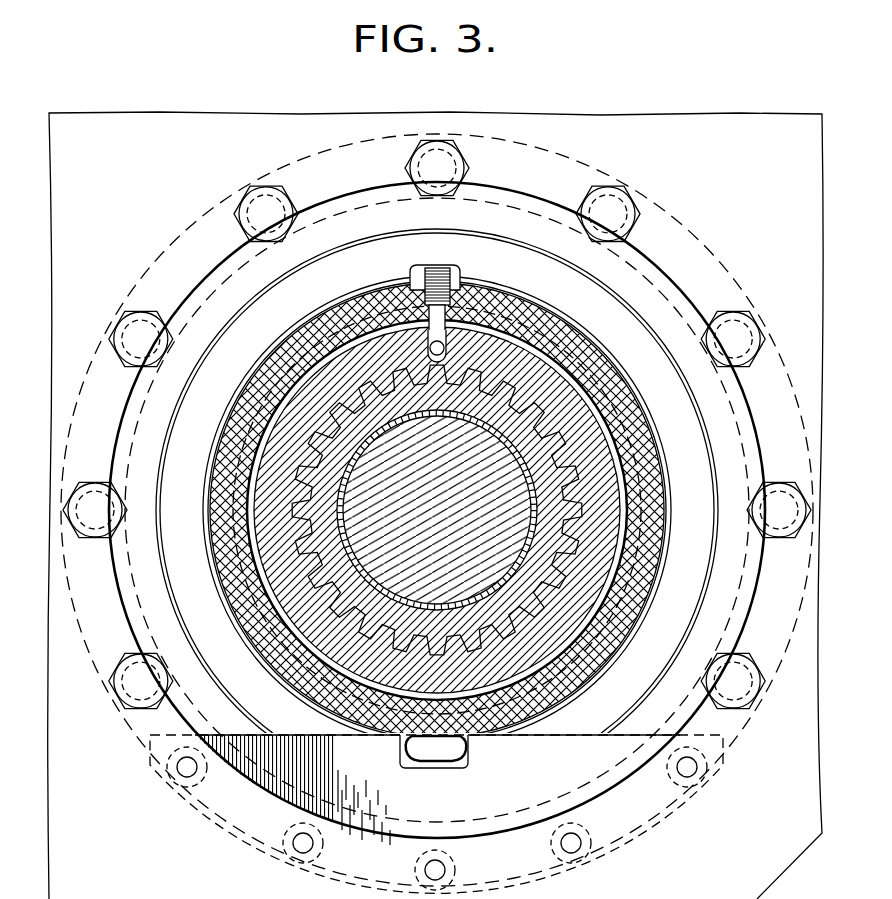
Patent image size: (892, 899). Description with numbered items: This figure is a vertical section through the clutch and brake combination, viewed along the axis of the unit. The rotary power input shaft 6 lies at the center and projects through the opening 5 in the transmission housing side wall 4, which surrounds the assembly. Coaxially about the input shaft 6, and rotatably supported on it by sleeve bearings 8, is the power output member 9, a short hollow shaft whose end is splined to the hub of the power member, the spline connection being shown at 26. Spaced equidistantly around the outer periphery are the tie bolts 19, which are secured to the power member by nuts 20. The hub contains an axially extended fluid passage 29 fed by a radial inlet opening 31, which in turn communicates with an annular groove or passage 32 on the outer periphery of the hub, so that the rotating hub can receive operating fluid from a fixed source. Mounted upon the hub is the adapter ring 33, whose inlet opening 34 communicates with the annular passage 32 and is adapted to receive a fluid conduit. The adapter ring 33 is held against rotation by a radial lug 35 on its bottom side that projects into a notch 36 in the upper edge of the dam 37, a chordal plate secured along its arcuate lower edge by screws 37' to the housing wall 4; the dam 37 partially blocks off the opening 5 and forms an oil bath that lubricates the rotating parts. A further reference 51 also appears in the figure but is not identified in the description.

The transmission housing side wall 4 is at (753, 258).
The opening 5 is at (668, 282).
The rotary power input shaft 6 is at (513, 497).
The sleeve bearings 8 is at (560, 463).
The power output member 9 is at (555, 472).
The tie bolts 19 is at (621, 206).
The nuts 20 is at (627, 232).
The splines 26 is at (583, 500).
The axially extended passage 29 is at (431, 343).
The inlet opening 31 is at (432, 330).
The annular groove or passage 32 is at (508, 345).
The adapter ring 33 is at (498, 312).
The inlet opening 34 is at (446, 280).
The radial projection or lug 35 is at (455, 745).
The notch 36 is at (449, 770).
The baffle or dam 37 is at (437, 513).
The screws 37' is at (459, 819).
The bolt circle 51 is at (519, 206).